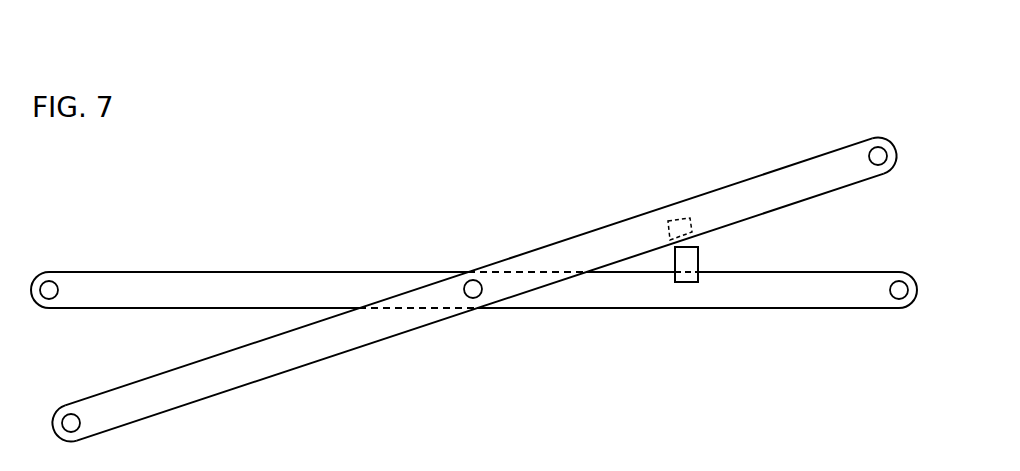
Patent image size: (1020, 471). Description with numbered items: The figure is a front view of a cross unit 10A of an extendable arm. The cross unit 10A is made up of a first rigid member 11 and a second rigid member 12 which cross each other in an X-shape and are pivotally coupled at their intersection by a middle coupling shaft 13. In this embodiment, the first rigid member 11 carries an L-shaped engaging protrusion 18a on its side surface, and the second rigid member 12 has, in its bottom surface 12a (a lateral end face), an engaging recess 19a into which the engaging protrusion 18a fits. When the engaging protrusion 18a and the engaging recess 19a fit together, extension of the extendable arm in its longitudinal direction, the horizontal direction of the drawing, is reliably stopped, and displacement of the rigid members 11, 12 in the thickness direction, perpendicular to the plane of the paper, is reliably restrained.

The cross unit 10A is at (388, 222).
The first rigid member 11 is at (192, 290).
The second rigid member 12 is at (481, 293).
The bottom surface 12a is at (815, 195).
The middle coupling shaft 13 is at (476, 278).
The engaging protrusion 18a is at (688, 258).
The engaging recess 19a is at (677, 214).